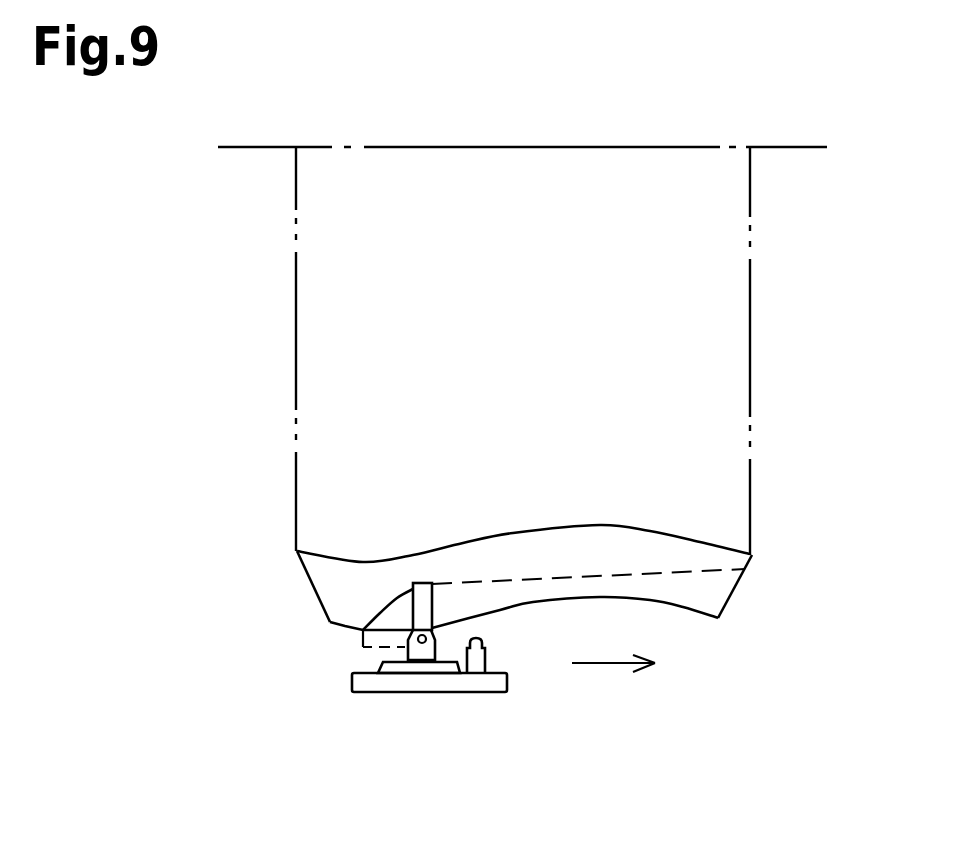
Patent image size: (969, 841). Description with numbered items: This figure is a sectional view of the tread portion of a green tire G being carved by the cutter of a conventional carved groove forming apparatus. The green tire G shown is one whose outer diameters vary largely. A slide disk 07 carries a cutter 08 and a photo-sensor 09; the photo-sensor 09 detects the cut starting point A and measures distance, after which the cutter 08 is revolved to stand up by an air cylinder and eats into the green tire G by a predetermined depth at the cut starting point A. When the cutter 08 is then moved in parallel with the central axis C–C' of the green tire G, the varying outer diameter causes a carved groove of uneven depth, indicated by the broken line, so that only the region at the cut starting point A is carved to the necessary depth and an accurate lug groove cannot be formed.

The slide disk 07 is at (490, 683).
The cutter 08 is at (432, 590).
The photo-sensor 09 is at (477, 642).
The green tire G is at (313, 593).
The cut starting point A is at (360, 628).
The central axis C is at (502, 151).
The central axis C' is at (811, 342).